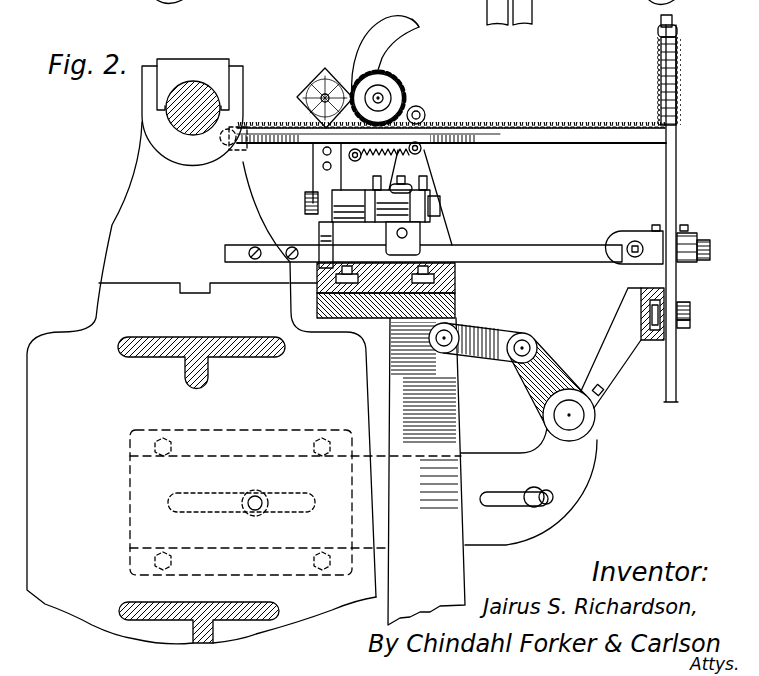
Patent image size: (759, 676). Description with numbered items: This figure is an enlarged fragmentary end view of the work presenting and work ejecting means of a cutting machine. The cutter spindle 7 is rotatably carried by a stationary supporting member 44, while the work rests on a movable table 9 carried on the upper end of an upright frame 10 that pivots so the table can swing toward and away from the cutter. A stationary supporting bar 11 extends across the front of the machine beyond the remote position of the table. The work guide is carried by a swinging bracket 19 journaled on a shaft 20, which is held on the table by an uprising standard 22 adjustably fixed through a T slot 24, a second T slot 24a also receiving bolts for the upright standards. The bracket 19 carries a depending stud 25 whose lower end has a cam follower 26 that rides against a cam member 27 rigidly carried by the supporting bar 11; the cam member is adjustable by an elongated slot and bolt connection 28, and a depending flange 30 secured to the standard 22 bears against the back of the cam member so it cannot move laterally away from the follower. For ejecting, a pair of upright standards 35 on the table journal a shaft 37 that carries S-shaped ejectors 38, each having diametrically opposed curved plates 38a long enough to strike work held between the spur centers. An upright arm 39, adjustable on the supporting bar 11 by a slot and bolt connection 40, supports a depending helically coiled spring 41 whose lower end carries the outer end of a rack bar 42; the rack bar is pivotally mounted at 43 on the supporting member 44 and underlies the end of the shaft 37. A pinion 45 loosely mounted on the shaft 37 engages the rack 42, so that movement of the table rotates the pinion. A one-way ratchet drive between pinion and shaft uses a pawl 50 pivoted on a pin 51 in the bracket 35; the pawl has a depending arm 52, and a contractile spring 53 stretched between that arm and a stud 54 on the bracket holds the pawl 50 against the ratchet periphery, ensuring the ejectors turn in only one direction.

The cutter spindle 7 is at (200, 84).
The movable table 9 is at (446, 280).
The upright frame 10 is at (438, 403).
The stationary supporting bar 11 is at (654, 342).
The swinging bracket 19 is at (343, 180).
The shaft 20 is at (441, 203).
The standard 22 is at (400, 208).
The T slot 24 is at (455, 298).
The T slot 24a is at (320, 286).
The depending stud 25 is at (306, 210).
The cam follower 26 is at (320, 240).
The cam member 27 is at (532, 246).
The elongated slot and bolt connection 28 is at (691, 305).
The depending flange 30 is at (422, 228).
The upright standard 35 is at (410, 172).
The shaft 37 is at (381, 96).
The ejector 38 is at (362, 41).
The plate 38a is at (419, 27).
The upright arm 39 is at (673, 19).
The elongated slot and bolt connection 40 is at (692, 326).
The helically coiled spring 41 is at (659, 79).
The rack bar 42 is at (510, 125).
The pivot 43 is at (234, 161).
The supporting member 44 is at (140, 169).
The pinion 45 is at (400, 81).
The pawl 50 is at (421, 110).
The pin 51 is at (423, 116).
The depending arm 52 is at (422, 149).
The contractile spring 53 is at (385, 163).
The stud 54 is at (360, 168).